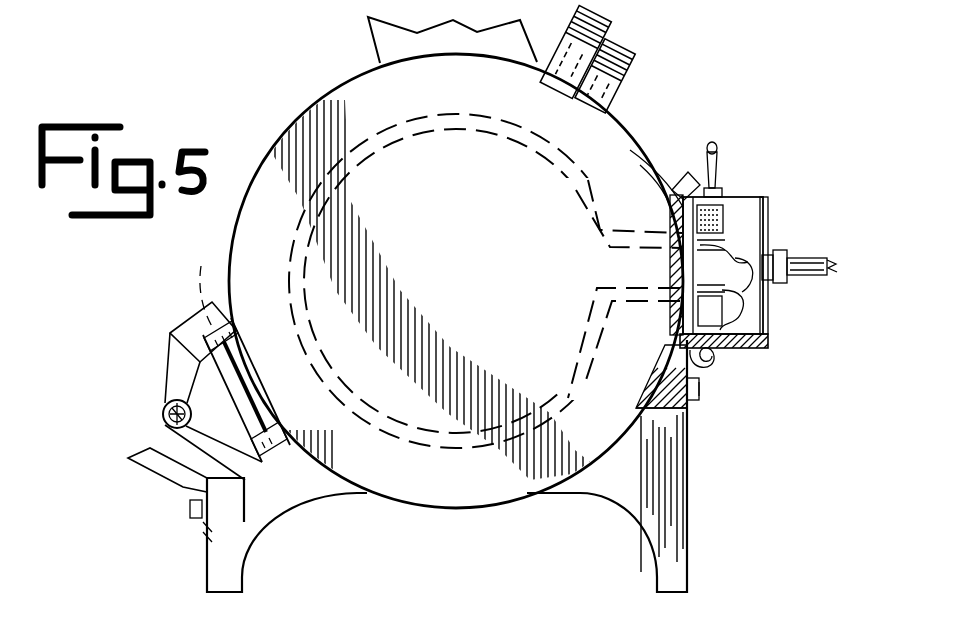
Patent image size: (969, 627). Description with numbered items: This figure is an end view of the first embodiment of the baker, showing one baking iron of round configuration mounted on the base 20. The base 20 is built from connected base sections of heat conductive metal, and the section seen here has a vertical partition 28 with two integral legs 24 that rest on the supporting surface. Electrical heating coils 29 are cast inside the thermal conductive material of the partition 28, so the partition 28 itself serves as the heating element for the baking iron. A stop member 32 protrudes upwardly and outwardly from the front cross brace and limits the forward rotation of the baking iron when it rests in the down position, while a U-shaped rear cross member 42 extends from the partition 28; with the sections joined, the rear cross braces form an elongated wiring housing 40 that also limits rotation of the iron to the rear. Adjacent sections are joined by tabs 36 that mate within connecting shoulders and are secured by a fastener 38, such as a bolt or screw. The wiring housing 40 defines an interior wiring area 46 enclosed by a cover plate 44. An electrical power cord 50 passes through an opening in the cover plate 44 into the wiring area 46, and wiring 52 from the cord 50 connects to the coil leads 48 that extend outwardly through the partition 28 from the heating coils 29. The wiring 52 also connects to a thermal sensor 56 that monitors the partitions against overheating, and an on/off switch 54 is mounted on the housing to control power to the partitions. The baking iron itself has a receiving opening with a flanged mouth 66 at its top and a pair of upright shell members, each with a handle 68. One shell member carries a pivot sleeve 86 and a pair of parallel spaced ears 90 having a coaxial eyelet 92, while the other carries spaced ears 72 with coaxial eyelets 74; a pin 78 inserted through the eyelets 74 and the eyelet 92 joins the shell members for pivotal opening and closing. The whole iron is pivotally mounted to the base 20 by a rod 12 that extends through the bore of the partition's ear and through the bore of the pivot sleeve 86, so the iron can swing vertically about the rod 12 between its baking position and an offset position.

The rod 12 is at (164, 419).
The base 20 is at (432, 512).
The legs 24 is at (273, 493).
The vertical partition 28 is at (312, 112).
The heating coils 29 is at (422, 114).
The stop member 32 is at (158, 470).
The connecting tab 36 is at (203, 528).
The fastener 38 is at (732, 385).
The wiring housing 40 is at (770, 354).
The rear cross member 42 is at (690, 438).
The cover plate 44 is at (765, 212).
The wiring area 46 is at (708, 311).
The coil leads 48 is at (695, 287).
The power cord 50 is at (796, 266).
The wiring 52 is at (757, 300).
The on/off switch 54 is at (700, 228).
The thermal sensor 56 is at (660, 370).
The flanged mouth 66 is at (385, 36).
The handle 68 is at (648, 60).
The ears 72 is at (236, 340).
The eyelets 74 is at (240, 360).
The pin 78 is at (178, 372).
The pivot sleeve 86 is at (164, 410).
The ears 90 is at (178, 335).
The eyelet 92 is at (196, 282).